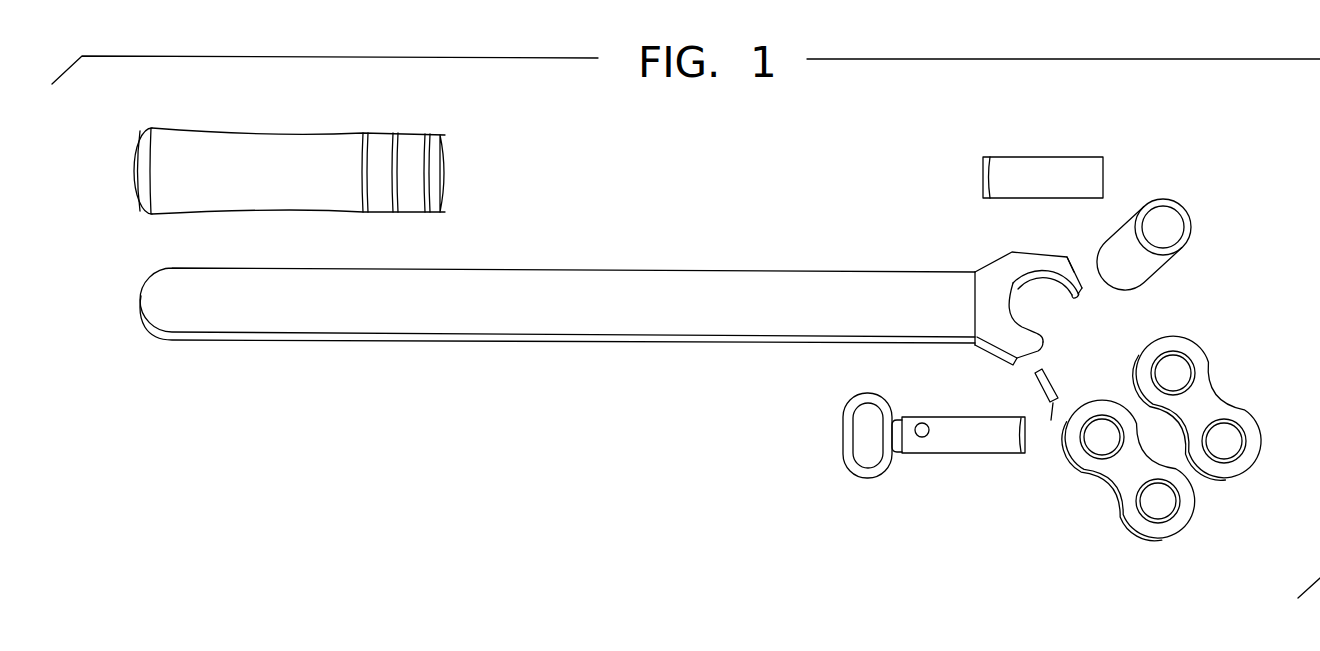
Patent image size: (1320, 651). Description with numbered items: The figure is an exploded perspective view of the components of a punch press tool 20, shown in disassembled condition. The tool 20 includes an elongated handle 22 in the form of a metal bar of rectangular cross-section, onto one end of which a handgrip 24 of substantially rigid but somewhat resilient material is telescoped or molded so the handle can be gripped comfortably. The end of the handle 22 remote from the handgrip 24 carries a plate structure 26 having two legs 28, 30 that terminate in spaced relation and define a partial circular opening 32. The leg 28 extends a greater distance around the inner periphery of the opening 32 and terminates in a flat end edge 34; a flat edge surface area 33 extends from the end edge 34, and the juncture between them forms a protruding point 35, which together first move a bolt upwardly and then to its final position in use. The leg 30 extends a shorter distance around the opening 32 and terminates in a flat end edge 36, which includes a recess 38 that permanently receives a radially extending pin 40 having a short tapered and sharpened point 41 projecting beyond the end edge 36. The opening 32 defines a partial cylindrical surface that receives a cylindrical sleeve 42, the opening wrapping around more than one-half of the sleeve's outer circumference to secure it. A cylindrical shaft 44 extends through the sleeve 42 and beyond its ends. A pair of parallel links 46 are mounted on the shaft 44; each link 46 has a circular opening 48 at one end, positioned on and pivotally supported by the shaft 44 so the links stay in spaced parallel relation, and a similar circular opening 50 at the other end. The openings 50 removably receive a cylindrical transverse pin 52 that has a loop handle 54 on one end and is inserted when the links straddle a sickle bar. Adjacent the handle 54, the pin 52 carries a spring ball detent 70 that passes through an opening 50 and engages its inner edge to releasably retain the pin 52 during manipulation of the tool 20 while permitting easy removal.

The punch press tool 20 is at (781, 252).
The elongated handle 22 is at (472, 317).
The handgrip 24 is at (282, 142).
The plate structure 26 is at (988, 270).
The leg 28 is at (1017, 267).
The leg 30 is at (1000, 335).
The partial circular opening 32 is at (1010, 283).
The flat edge surface area 33 is at (1073, 263).
The flat end edge 34 is at (1074, 298).
The protruding point 35 is at (1086, 291).
The flat end edge 36 is at (1044, 348).
The recess 38 is at (1020, 360).
The pin 40 is at (1052, 372).
The tapered and sharpened point 41 is at (1051, 420).
The cylindrical sleeve 42 is at (1160, 263).
The cylindrical shaft 44 is at (1063, 172).
The links 46 is at (1205, 405).
The circular opening 48 is at (1183, 367).
The circular opening 50 is at (1237, 457).
The removable transverse pin 52 is at (987, 447).
The loop handle 54 is at (862, 465).
The spring ball detent 70 is at (922, 437).